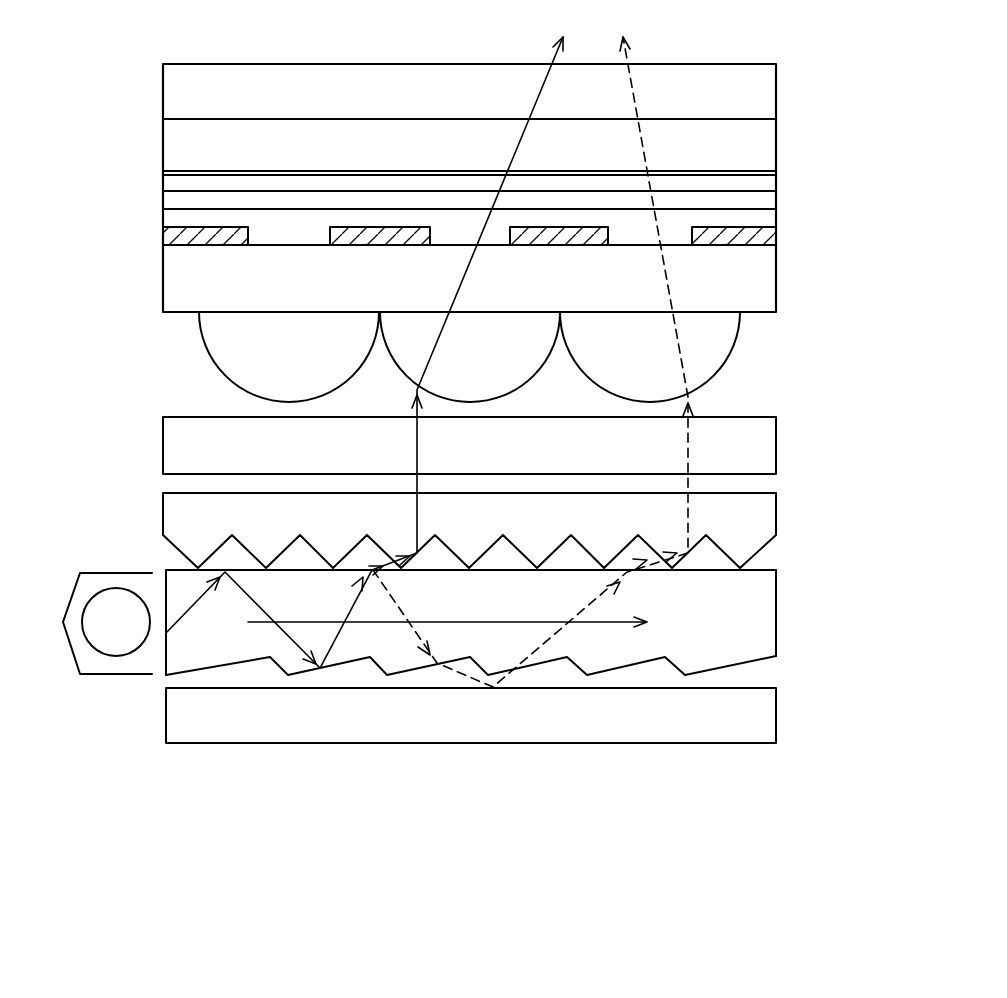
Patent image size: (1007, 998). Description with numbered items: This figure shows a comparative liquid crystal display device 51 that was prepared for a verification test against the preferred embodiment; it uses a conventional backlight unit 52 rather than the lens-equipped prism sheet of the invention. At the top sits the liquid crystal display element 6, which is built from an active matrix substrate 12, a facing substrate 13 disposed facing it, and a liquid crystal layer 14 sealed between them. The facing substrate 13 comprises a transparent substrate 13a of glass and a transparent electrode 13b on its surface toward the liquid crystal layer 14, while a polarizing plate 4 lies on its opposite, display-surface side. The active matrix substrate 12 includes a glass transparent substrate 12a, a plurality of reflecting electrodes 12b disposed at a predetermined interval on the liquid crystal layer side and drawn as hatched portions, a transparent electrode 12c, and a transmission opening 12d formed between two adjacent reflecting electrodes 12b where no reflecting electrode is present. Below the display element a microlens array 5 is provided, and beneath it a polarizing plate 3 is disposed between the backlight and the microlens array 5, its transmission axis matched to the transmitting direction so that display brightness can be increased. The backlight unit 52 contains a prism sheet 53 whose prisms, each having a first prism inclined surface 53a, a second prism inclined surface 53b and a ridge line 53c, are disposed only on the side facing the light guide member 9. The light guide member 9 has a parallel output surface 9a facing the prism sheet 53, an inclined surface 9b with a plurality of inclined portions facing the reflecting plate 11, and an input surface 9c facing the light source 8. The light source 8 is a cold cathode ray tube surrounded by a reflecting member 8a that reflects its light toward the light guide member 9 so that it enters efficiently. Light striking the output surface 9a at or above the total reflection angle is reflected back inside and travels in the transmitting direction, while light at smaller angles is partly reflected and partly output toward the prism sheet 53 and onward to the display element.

The comparative liquid crystal display device 51 is at (798, 395).
The liquid crystal display element 6 is at (33, 133).
The polarizing plate 4 is at (178, 93).
The facing substrate 13 is at (75, 128).
The transparent substrate 13a is at (178, 145).
The transparent electrode 13b is at (180, 182).
The liquid crystal layer 14 is at (177, 199).
The active matrix substrate 12 is at (75, 320).
The transparent substrate 12a is at (193, 285).
The reflecting electrodes 12b is at (180, 233).
The transparent electrode 12c is at (178, 217).
The transmission opening 12d is at (273, 235).
The microlens array 5 is at (738, 345).
The conventional backlight unit 52 is at (852, 490).
The polarizing plate 3 is at (760, 448).
The prism sheet 53 is at (758, 512).
The first prism inclined surface 53a is at (448, 557).
The second prism inclined surface 53b is at (495, 557).
The ridge line 53c is at (471, 568).
The light guide member 9 is at (760, 612).
The output surface 9a is at (762, 565).
The inclined surface 9b is at (627, 665).
The input surface 9c is at (165, 654).
The reflecting plate 11 is at (760, 715).
The light source 8 is at (113, 638).
The reflecting member 8a is at (72, 653).